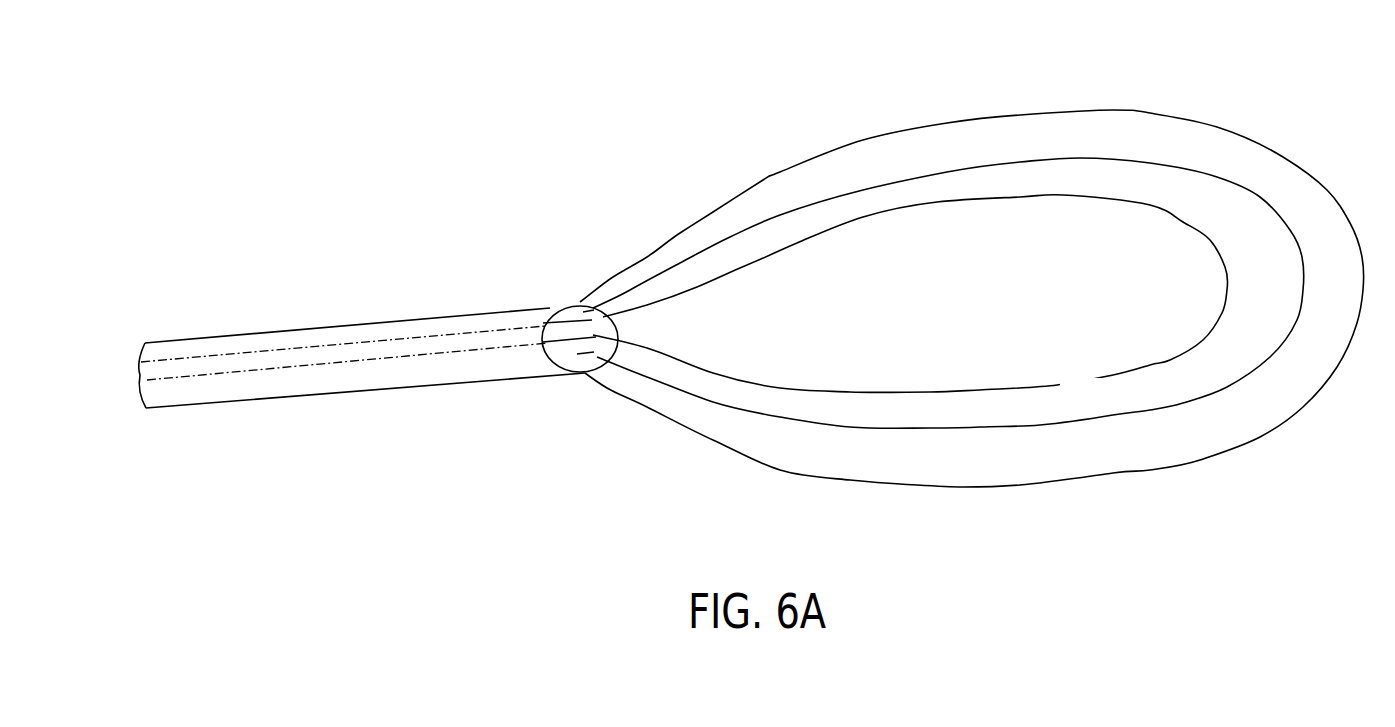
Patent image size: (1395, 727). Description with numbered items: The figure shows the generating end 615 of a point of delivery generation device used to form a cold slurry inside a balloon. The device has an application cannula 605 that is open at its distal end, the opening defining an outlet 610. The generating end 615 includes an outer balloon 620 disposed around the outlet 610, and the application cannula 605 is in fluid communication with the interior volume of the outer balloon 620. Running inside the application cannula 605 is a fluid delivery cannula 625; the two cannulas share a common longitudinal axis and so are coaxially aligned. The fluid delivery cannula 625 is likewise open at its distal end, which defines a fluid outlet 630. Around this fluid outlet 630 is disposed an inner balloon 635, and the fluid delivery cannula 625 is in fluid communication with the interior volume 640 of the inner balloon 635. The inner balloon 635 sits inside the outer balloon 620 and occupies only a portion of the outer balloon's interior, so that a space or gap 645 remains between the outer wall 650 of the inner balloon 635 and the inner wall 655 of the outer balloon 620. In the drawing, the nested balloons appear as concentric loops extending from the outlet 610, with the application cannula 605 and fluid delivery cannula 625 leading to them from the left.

The application cannula 605 is at (362, 375).
The outlet 610 is at (613, 388).
The generating end 615 is at (972, 297).
The outer balloon 620 is at (862, 142).
The fluid delivery cannula 625 is at (290, 365).
The fluid outlet 630 is at (595, 338).
The inner balloon 635 is at (723, 373).
The interior volume of the inner balloon 640 is at (910, 297).
The space or gap 645 is at (1070, 412).
The outer wall of the inner balloon 650 is at (935, 200).
The inner wall of the outer balloon 655 is at (1067, 158).